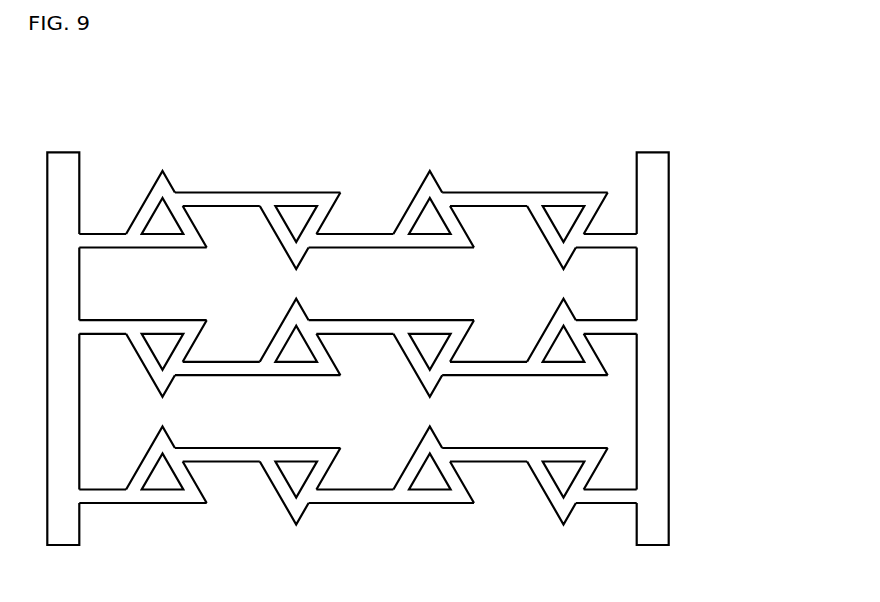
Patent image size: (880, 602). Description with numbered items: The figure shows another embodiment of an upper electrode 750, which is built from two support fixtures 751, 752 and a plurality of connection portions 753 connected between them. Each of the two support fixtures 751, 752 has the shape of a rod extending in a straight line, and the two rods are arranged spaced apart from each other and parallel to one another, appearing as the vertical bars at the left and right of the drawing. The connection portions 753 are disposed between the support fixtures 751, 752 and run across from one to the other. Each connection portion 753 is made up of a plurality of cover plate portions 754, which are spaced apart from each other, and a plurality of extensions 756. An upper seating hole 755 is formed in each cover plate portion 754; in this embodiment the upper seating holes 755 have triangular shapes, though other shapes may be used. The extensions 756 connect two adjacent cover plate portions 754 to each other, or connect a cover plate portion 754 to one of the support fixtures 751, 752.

The upper electrode 750 is at (636, 116).
The support fixture 751 is at (65, 158).
The support fixture 752 is at (662, 190).
The connection portion 753 is at (412, 342).
The cover plate portion 754 is at (156, 180).
The upper seating hole 755 is at (162, 222).
The extension 756 is at (238, 192).